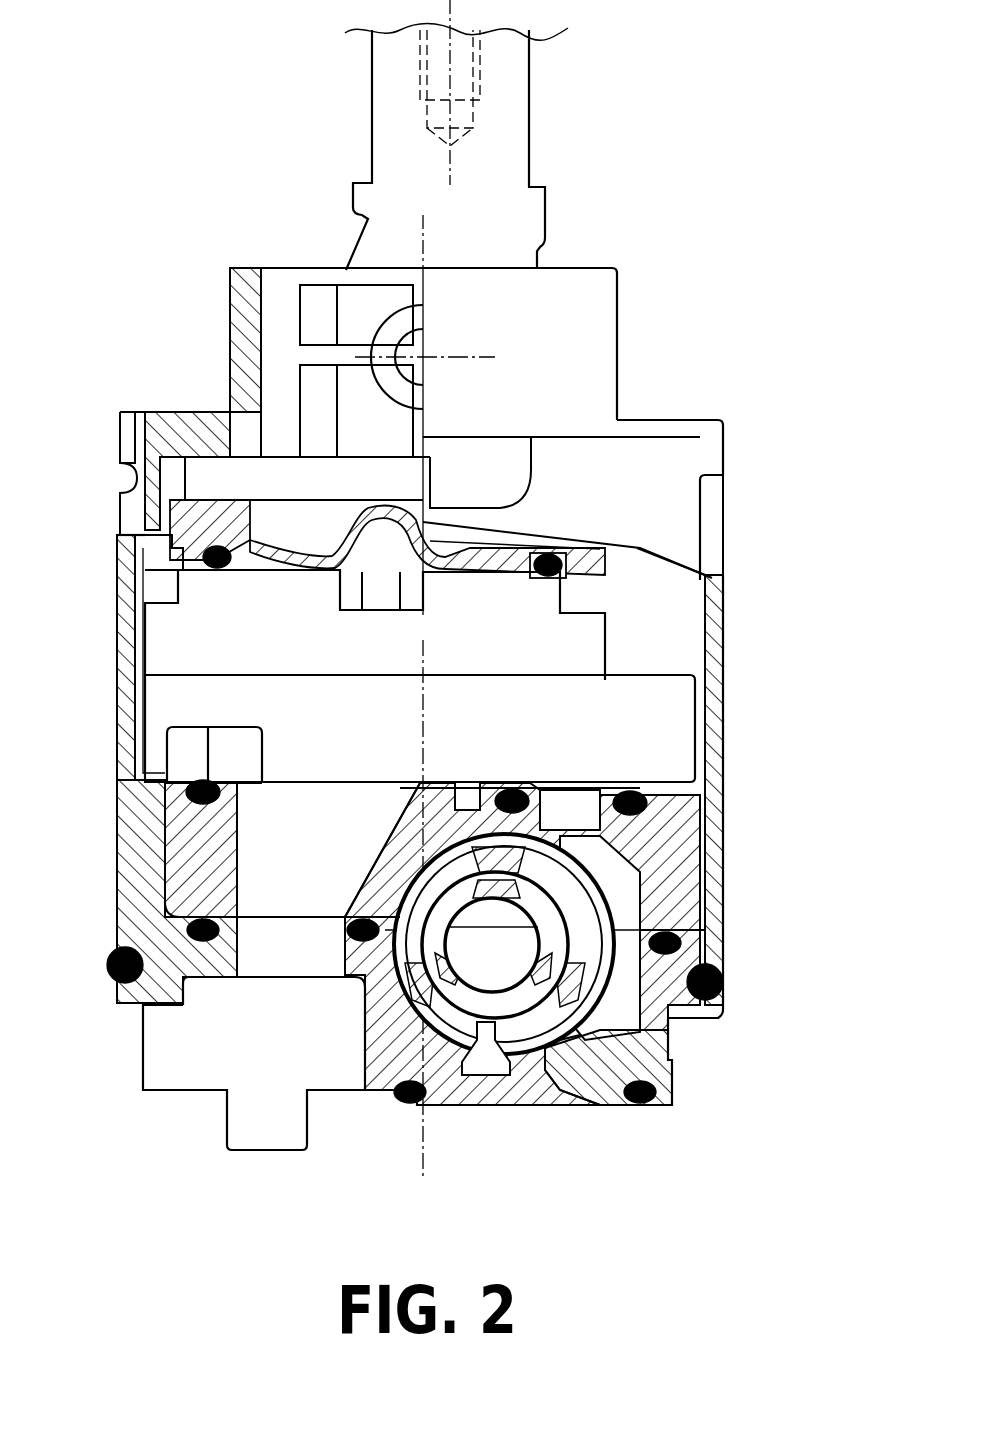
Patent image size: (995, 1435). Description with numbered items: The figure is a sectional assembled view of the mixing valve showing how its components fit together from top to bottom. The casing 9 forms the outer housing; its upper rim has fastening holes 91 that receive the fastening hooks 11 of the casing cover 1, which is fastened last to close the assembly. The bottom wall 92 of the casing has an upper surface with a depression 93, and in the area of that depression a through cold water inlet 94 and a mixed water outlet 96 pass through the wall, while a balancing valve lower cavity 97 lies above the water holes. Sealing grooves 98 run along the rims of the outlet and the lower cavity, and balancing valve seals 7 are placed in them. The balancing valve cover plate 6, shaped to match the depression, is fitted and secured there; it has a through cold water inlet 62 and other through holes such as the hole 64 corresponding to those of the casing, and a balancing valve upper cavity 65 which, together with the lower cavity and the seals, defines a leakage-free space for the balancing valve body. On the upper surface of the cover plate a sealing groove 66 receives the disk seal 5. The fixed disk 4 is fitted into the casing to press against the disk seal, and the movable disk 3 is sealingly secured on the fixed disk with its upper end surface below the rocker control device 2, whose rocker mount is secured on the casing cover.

The rocker control device 2 is at (283, 147).
The casing cover 1 is at (229, 356).
The fastening hooks 11 is at (129, 522).
The fastening holes 91 is at (116, 527).
The movable disk 3 is at (190, 623).
The fixed disk 4 is at (622, 705).
The through hole 64 is at (307, 832).
The casing 9 is at (118, 700).
The depression 93 is at (173, 853).
The balancing valve cover plate 6 is at (680, 866).
The disk seal 5 is at (514, 790).
The balancing valve upper cavity 65 is at (452, 835).
The sealing groove 66 is at (560, 790).
The cold water inlet 62 is at (700, 910).
The balancing valve seals 7 is at (354, 922).
The cold water inlet 94 is at (545, 1086).
The mixed water outlet 96 is at (276, 953).
The sealing grooves 98 is at (354, 950).
The balancing valve lower cavity 97 is at (364, 1098).
The bottom wall 92 is at (155, 1004).